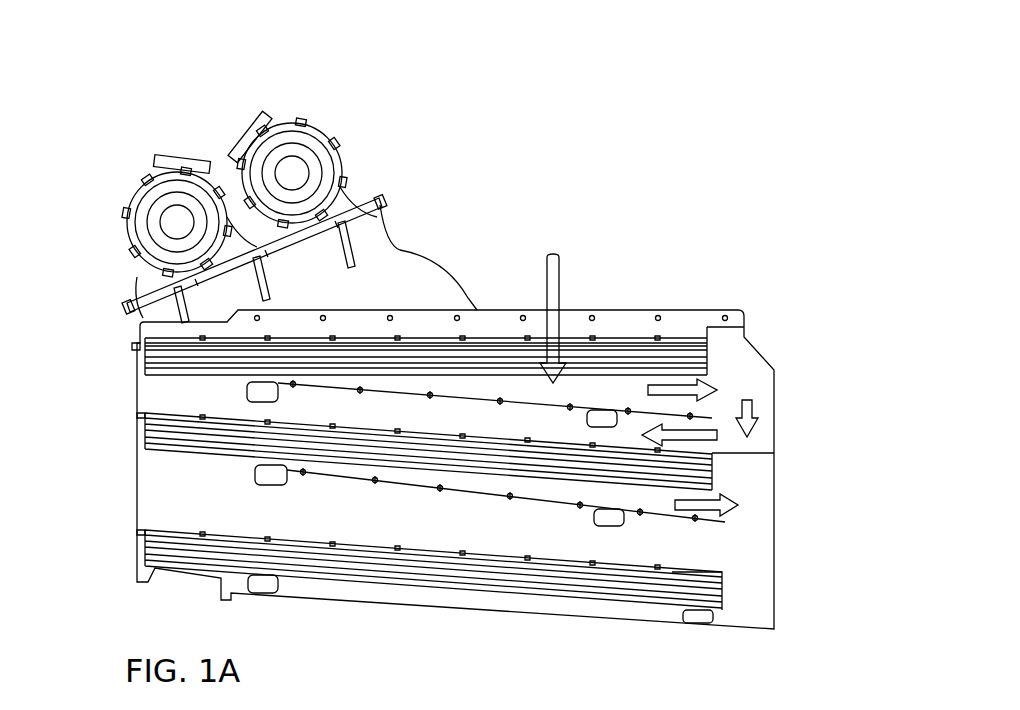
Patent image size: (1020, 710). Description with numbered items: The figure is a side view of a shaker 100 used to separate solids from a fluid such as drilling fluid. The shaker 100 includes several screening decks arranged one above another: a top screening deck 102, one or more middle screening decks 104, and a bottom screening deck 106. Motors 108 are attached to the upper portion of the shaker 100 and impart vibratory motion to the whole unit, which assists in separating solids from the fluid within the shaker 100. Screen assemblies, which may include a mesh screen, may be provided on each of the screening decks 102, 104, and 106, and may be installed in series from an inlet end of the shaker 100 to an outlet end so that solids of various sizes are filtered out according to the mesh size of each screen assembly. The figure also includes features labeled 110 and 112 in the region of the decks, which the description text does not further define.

The shaker 100 is at (147, 75).
The top screening deck 102 is at (600, 352).
The middle screening deck 104 is at (712, 485).
The bottom screening deck 106 is at (673, 583).
The motor 108 is at (146, 181).
The material flow path 110 is at (712, 415).
The material flow path 112 is at (667, 517).